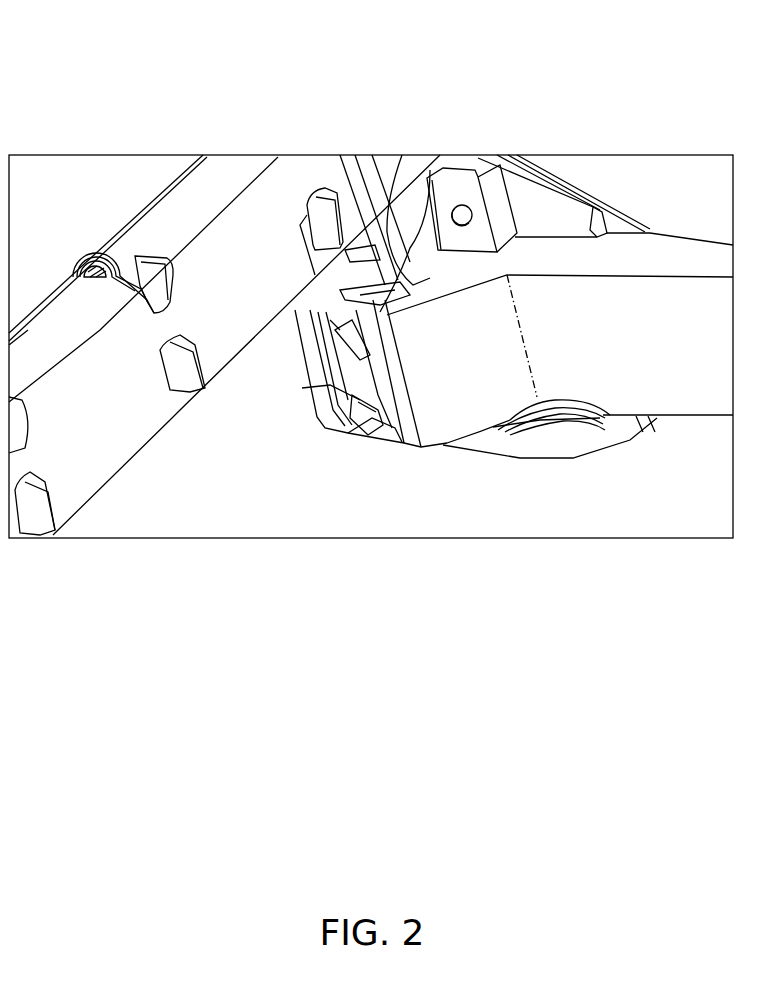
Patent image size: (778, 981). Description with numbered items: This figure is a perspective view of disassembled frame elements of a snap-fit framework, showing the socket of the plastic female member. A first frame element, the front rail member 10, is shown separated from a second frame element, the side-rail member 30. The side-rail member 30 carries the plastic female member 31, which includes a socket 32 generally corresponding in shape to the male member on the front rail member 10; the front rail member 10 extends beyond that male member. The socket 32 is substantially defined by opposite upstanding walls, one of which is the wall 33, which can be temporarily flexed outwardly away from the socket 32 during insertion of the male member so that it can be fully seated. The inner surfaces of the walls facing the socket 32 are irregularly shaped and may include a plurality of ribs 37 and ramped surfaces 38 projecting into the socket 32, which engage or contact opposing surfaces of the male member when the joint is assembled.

The front rail member 10 is at (77, 268).
The side-rail member 30 is at (663, 325).
The plastic female member 31 is at (495, 378).
The socket 32 is at (362, 428).
The upstanding wall 33 is at (300, 358).
The ribs 37 is at (315, 275).
The ramped surfaces 38 is at (375, 300).